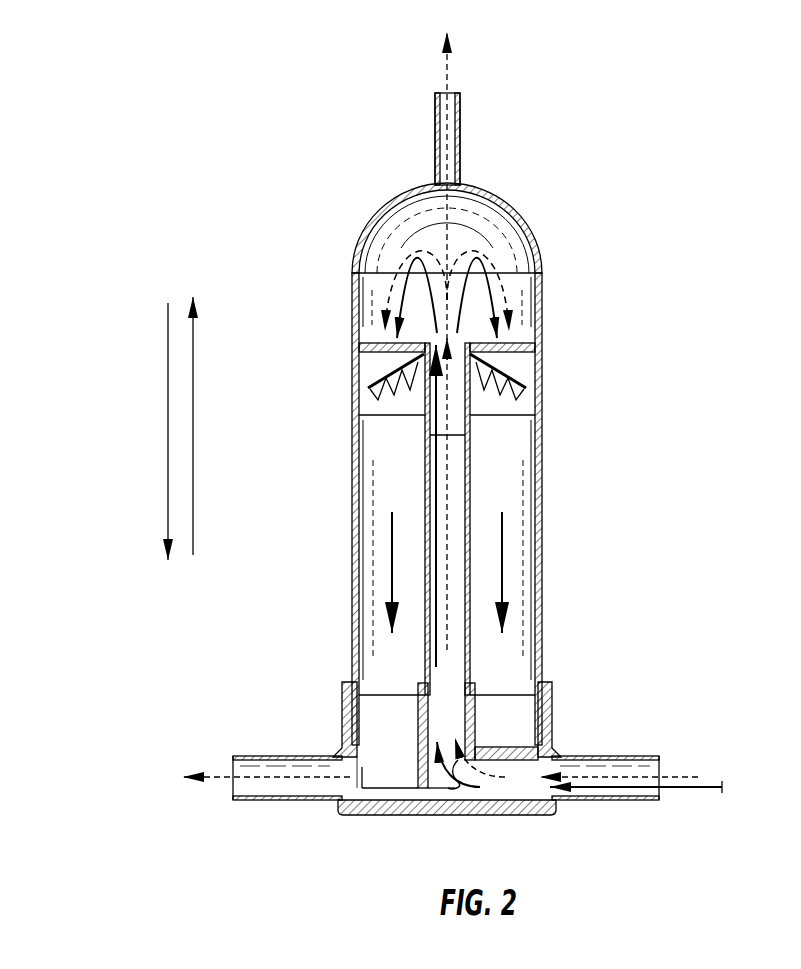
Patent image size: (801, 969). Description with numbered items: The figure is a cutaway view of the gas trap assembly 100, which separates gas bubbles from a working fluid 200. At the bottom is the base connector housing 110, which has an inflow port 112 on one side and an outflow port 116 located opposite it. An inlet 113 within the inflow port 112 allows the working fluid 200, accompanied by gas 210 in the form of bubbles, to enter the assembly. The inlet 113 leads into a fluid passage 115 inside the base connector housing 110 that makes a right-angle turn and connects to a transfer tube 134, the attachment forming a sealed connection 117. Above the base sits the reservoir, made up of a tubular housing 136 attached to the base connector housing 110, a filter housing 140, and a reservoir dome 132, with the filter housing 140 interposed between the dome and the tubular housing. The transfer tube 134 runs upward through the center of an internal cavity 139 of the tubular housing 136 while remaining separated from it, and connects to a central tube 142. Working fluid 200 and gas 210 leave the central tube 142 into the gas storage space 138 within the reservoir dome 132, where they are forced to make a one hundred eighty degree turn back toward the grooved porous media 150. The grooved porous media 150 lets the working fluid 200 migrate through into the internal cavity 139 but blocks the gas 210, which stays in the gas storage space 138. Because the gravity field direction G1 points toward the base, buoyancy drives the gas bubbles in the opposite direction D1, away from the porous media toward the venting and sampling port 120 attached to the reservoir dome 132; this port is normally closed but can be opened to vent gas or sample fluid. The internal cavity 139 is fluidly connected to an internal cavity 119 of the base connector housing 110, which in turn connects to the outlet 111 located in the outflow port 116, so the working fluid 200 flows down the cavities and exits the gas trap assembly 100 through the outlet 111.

The gas trap assembly 100 is at (255, 103).
The base connector housing 110 is at (515, 815).
The outlet 111 is at (240, 800).
The inflow port 112 is at (583, 756).
The inlet 113 is at (660, 795).
The fluid passage 115 is at (423, 765).
The outflow port 116 is at (263, 755).
The sealed connection 117 is at (428, 682).
The internal cavity 119 is at (405, 727).
The venting and sampling port 120 is at (461, 130).
The reservoir dome 132 is at (532, 228).
The transfer tube 134 is at (425, 483).
The tubular housing 136 is at (540, 540).
The gas storage space 138 is at (405, 228).
The internal cavity 139 is at (497, 483).
The filter housing 140 is at (520, 296).
The central tube 142 is at (420, 400).
The grooved porous media 150 is at (525, 360).
The working fluid 200 is at (392, 575).
The gas 210 is at (447, 75).
The gravity field direction G1 is at (168, 413).
The direction opposite the gravity field D1 is at (193, 383).